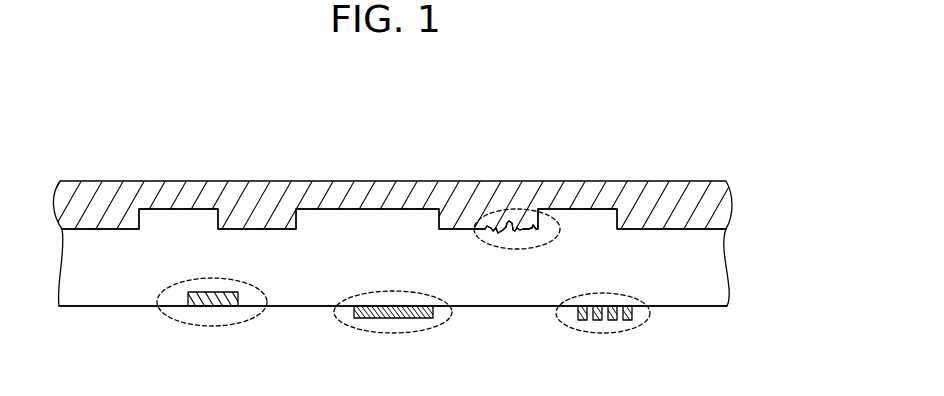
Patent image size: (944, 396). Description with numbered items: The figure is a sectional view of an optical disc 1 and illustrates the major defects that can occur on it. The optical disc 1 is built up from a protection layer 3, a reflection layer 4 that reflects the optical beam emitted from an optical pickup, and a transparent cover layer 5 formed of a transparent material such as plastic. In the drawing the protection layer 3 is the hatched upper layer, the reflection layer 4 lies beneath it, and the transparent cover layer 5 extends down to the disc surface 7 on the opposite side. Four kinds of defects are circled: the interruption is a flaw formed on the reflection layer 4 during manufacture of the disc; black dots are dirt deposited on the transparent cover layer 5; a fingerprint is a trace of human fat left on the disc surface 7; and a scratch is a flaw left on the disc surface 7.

The optical disc 1 is at (256, 170).
The protection layer 3 is at (730, 188).
The reflection layer 4 is at (729, 230).
The transparent cover layer 5 is at (729, 270).
The disc surface 7 is at (700, 307).